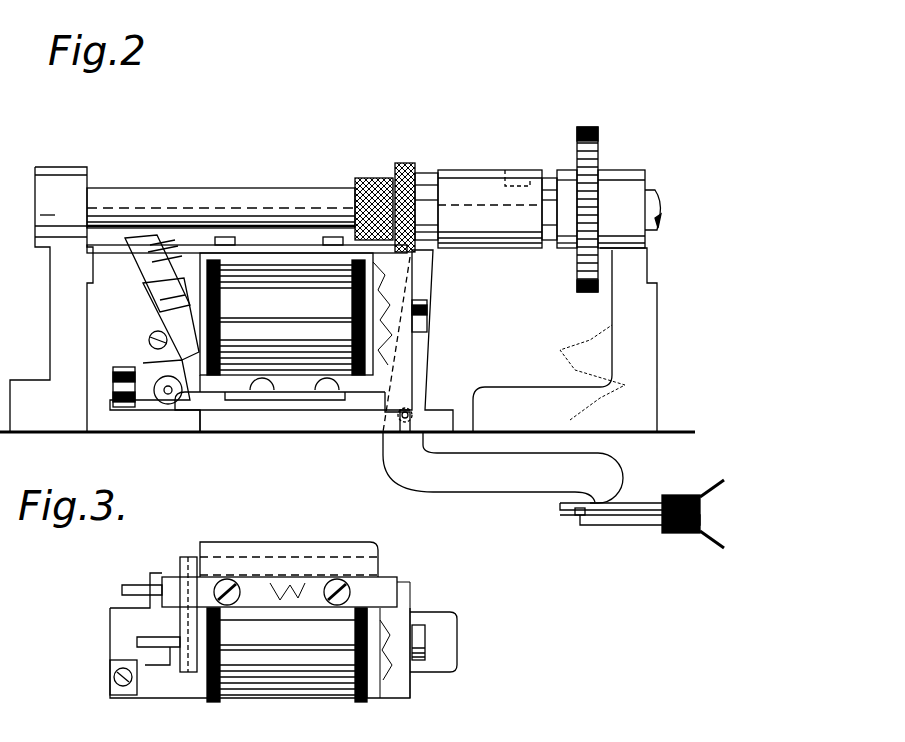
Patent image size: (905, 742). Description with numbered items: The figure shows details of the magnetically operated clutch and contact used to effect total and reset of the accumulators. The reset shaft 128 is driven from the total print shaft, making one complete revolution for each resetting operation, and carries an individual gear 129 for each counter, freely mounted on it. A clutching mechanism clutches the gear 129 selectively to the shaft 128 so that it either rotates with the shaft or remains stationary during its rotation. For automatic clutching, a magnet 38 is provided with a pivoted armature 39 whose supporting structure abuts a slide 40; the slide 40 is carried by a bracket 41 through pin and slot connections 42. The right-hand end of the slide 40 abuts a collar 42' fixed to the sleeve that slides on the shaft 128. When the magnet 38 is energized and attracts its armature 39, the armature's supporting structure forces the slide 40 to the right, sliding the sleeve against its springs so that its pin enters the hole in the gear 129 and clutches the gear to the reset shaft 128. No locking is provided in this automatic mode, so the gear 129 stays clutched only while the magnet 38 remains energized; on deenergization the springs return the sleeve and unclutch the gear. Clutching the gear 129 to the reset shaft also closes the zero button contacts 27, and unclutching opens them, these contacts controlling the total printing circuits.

In FIG. 2, the zero button contacts 27 is at (562, 510).
In FIG. 2, the magnet 38 is at (292, 342).
In FIG. 3, the magnet 38 is at (308, 642).
In FIG. 2, the pivoted armature 39 is at (177, 312).
In FIG. 3, the pivoted armature 39 is at (190, 570).
In FIG. 2, the slide 40 is at (248, 247).
In FIG. 3, the slide 40 is at (272, 584).
In FIG. 3, the bracket 41 is at (335, 556).
In FIG. 3, the pin and slot connections 42 is at (321, 559).
In FIG. 2, the collar 42' is at (438, 341).
In FIG. 2, the reset shaft 128 is at (190, 202).
In FIG. 2, the gear 129 is at (598, 150).